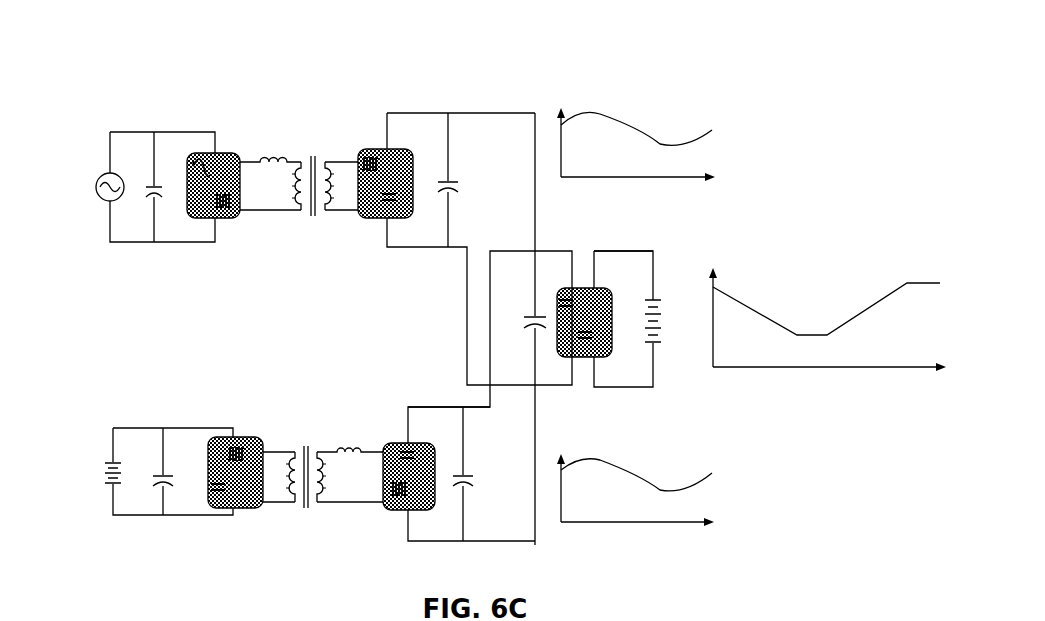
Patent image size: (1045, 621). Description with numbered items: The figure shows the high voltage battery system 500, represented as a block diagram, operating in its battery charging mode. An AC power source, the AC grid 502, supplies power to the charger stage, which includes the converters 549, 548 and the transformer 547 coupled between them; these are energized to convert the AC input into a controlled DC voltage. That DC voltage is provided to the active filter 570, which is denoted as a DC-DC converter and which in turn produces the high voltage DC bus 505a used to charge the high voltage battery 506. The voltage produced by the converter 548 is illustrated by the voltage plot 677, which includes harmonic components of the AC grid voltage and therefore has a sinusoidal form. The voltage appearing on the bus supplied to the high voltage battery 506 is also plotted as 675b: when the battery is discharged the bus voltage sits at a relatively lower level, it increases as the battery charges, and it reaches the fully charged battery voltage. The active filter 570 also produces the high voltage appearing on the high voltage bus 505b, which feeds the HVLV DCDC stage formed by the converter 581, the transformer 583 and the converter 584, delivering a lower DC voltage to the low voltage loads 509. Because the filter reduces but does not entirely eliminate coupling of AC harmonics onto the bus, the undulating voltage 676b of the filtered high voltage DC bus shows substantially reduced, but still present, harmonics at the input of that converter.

The high voltage battery system 500 is at (501, 72).
The AC grid 502 is at (100, 175).
The high voltage DC bus 505a is at (655, 251).
The high voltage bus 505b is at (433, 407).
The high voltage battery 506 is at (660, 300).
The low voltage loads 509 is at (108, 462).
The transformer 547 is at (313, 162).
The converter 548 is at (378, 218).
The converter 549 is at (220, 153).
The active filter 570 is at (584, 288).
The DC/AC converter stage 581 is at (397, 510).
The transformer 583 is at (312, 452).
The low-voltage converter stage 584 is at (246, 508).
The battery voltage waveform 675b is at (808, 267).
The undulating voltage 676b is at (626, 442).
The voltage plot 677 is at (696, 104).